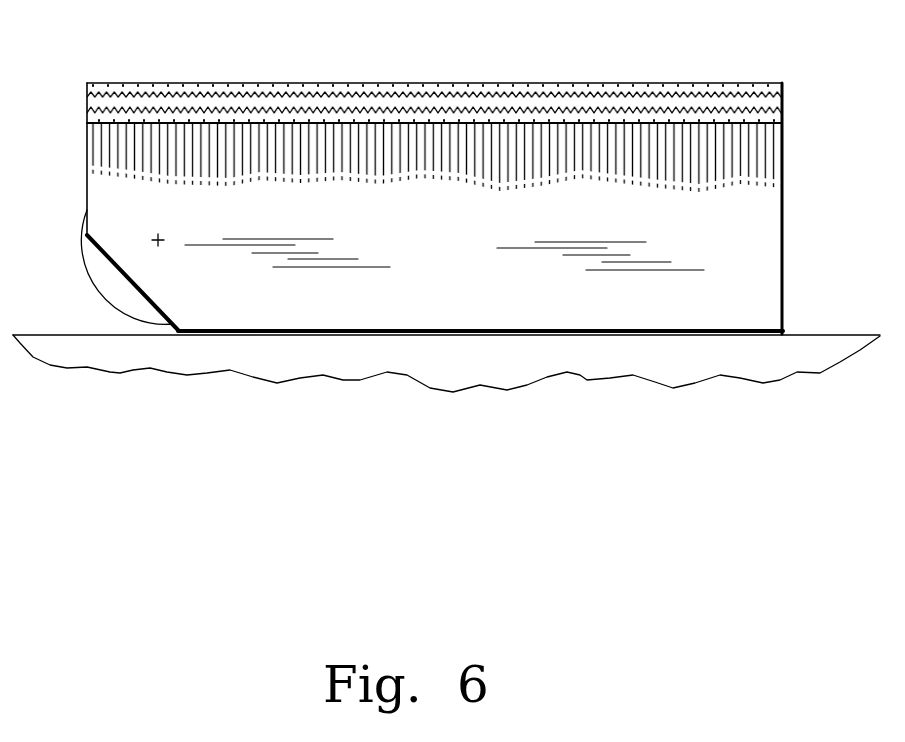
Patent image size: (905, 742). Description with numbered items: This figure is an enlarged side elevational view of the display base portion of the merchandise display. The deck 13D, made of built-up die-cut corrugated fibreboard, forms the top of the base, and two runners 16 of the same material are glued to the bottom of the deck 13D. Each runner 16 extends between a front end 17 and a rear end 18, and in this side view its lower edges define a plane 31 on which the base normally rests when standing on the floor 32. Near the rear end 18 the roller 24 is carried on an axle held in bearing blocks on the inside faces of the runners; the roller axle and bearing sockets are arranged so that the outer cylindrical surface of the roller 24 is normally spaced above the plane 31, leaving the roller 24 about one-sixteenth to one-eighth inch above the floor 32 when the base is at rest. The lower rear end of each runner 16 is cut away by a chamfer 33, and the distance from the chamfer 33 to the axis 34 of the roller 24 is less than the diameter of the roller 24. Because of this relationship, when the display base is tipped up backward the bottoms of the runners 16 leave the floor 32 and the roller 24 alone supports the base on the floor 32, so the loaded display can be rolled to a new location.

The deck 13D is at (447, 82).
The runner 16 is at (440, 232).
The front end of runner 17 is at (782, 207).
The rear end of runner 18 is at (87, 137).
The roller 24 is at (93, 257).
The plane of the lower edges of the runners 31 is at (563, 335).
The floor 32 is at (70, 335).
The chamfer 33 is at (135, 287).
The axis of the roller 34 is at (161, 243).